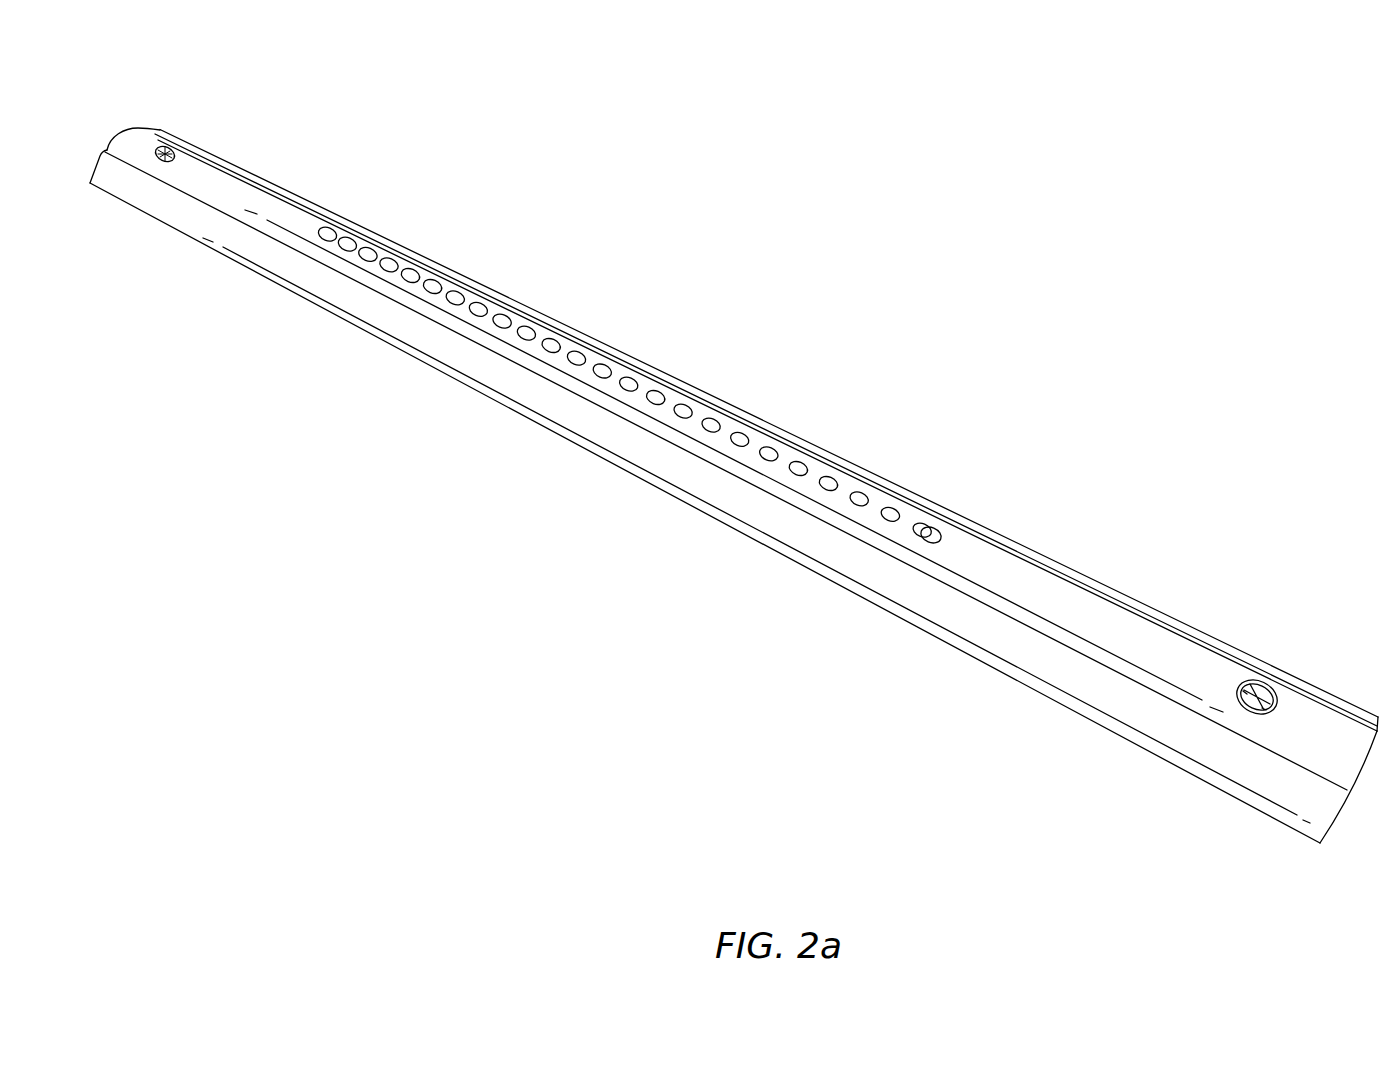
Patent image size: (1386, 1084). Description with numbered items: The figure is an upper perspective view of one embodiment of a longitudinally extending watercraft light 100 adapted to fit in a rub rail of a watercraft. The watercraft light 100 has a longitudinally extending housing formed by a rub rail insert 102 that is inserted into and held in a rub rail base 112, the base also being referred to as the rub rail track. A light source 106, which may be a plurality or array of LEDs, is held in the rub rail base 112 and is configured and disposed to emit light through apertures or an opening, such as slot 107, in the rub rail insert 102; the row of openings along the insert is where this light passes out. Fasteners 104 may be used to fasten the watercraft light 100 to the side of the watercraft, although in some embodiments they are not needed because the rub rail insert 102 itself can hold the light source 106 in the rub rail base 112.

The watercraft light 100 is at (858, 292).
The rub rail insert 102 is at (253, 200).
The fasteners 104 is at (158, 135).
The light source 106 is at (658, 396).
The slot 107 is at (450, 290).
The rub rail base 112 is at (1097, 696).